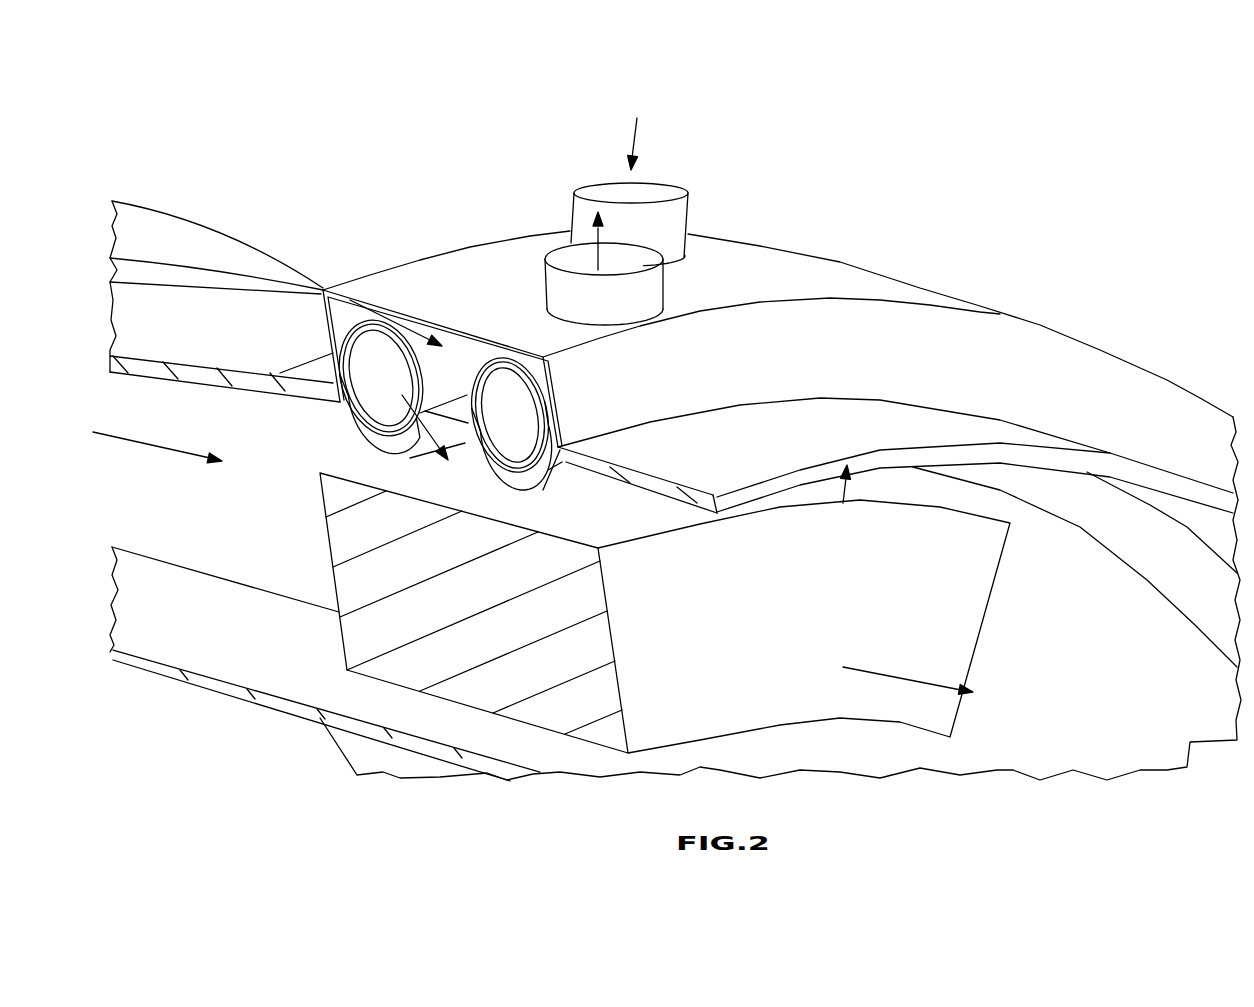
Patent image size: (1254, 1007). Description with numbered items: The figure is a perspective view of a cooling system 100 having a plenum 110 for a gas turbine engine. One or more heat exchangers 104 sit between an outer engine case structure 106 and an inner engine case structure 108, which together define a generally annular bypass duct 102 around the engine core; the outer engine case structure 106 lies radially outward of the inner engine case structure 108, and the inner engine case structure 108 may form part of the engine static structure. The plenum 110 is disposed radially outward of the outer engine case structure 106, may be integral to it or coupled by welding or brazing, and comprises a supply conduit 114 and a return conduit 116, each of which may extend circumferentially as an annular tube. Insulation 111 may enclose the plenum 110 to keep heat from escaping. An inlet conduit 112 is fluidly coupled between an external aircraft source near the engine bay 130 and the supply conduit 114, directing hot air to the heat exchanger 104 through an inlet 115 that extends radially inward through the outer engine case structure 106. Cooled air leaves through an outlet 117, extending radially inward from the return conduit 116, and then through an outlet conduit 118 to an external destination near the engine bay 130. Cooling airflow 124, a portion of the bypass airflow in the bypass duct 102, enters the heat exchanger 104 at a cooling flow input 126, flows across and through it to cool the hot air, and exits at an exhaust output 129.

The cooling system 100 is at (277, 153).
The engine bay 130 is at (436, 113).
The insulation 111 is at (481, 260).
The inlet conduit 112 is at (585, 208).
The outlet conduit 118 is at (570, 260).
The supply conduit 114 is at (357, 292).
The plenum 110 is at (408, 313).
The return conduit 116 is at (507, 352).
The inlet 115 is at (430, 466).
The bypass duct 102 is at (173, 508).
The airflow 124 is at (143, 438).
The heat exchanger 104 is at (353, 583).
The cooling flow input 126 is at (338, 640).
The inner engine case structure 108 is at (225, 645).
The outer engine case structure 106 is at (754, 453).
The exhaust output 129 is at (751, 643).
The outlet 117 is at (862, 480).